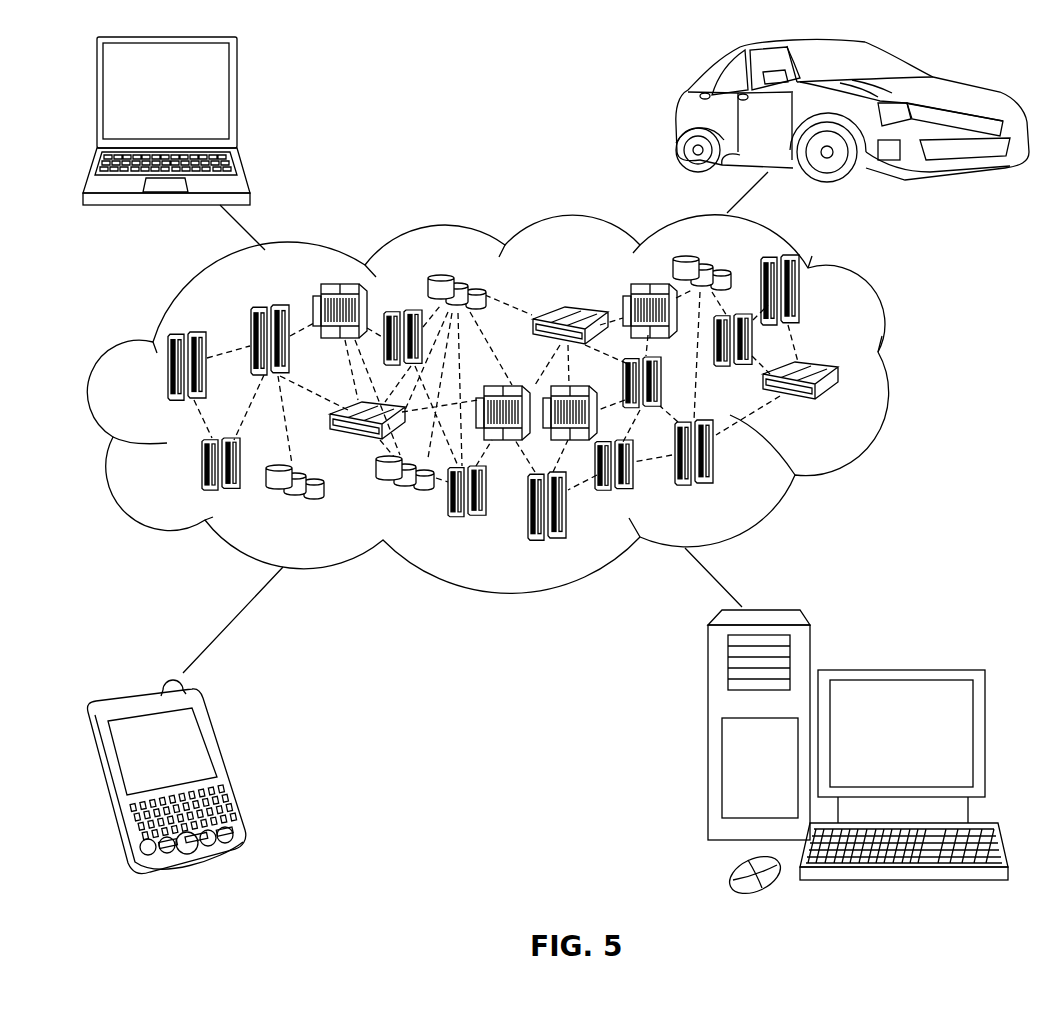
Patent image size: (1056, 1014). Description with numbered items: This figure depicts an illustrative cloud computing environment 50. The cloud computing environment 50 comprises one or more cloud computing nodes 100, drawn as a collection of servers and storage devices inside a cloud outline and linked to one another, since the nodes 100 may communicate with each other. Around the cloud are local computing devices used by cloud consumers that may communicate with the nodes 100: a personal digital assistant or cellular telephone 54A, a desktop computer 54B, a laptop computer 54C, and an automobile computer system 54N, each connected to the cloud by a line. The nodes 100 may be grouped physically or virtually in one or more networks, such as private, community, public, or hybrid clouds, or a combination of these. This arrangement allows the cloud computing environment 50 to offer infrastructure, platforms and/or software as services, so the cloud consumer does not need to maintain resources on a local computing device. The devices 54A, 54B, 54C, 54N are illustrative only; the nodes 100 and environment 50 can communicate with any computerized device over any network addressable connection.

The cloud computing environment 50 is at (900, 379).
The cloud computing nodes 100 is at (843, 407).
The personal digital assistant or cellular telephone 54A is at (225, 764).
The desktop computer 54B is at (900, 668).
The laptop computer 54C is at (235, 100).
The automobile computer system 54N is at (680, 114).